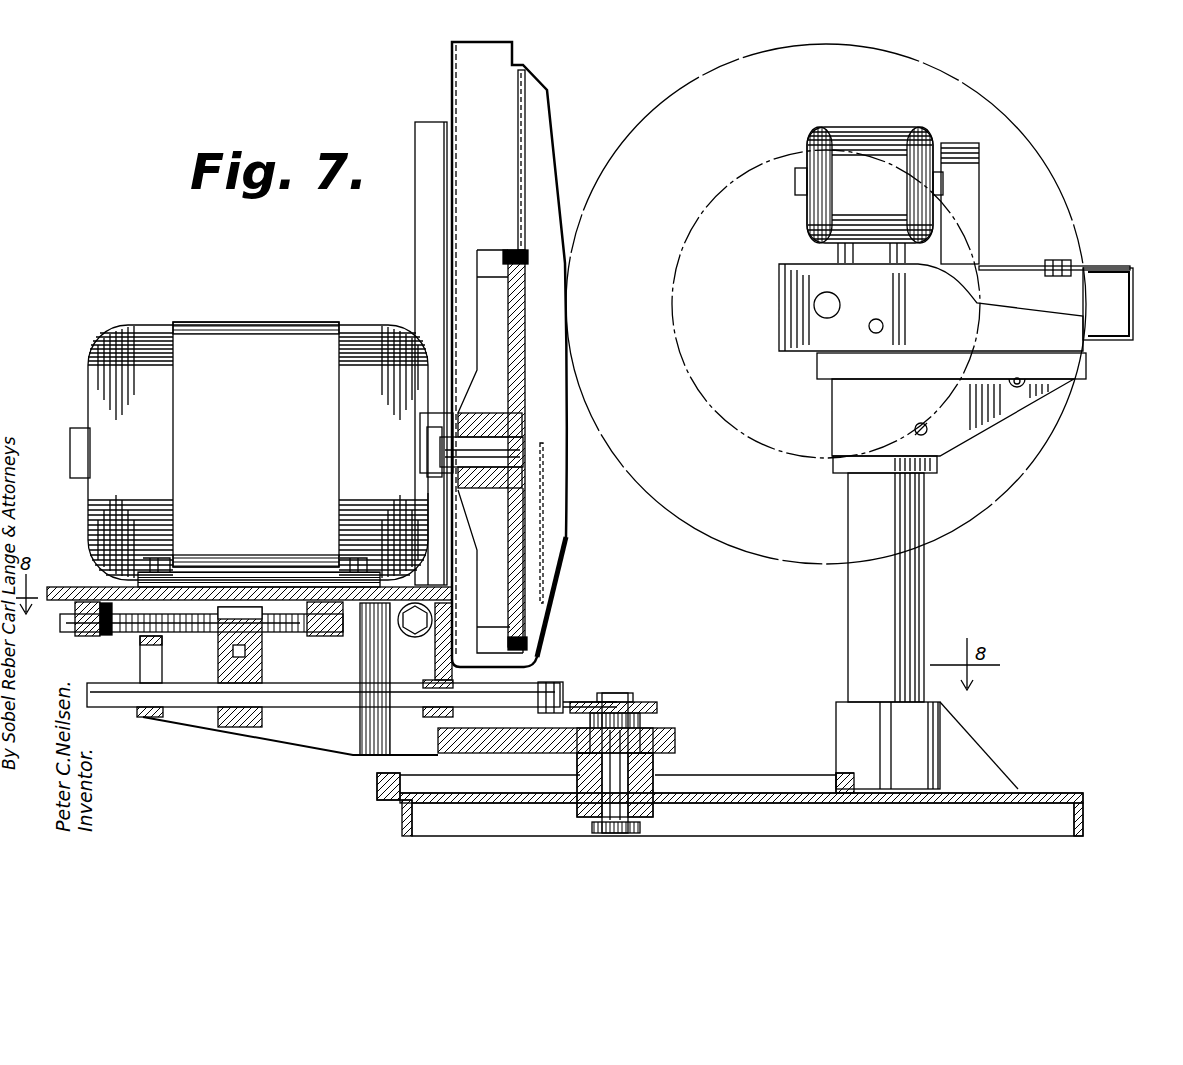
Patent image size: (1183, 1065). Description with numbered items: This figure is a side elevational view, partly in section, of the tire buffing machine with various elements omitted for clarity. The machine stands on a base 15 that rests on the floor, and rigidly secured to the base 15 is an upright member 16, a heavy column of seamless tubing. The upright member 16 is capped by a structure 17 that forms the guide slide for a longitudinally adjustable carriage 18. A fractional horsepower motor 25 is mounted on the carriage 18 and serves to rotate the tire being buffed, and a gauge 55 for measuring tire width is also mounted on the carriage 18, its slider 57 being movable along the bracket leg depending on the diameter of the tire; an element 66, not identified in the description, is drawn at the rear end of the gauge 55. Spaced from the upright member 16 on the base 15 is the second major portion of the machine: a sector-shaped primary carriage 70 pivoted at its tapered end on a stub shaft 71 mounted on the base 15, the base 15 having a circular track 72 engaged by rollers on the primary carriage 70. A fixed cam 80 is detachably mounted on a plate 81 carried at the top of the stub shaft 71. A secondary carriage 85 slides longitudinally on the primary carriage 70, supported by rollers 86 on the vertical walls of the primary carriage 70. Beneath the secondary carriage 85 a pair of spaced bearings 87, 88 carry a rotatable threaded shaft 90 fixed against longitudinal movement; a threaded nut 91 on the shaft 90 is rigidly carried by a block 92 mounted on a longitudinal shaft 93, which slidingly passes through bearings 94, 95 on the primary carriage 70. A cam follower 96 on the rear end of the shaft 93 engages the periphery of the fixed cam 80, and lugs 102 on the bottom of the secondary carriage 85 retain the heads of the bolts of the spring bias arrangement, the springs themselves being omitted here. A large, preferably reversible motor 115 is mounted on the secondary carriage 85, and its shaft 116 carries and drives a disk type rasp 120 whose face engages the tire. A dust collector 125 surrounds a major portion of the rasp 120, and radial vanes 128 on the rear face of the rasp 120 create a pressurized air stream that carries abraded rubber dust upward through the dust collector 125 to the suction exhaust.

The base 15 is at (400, 793).
The upright member 16 is at (924, 590).
The structure 17 is at (832, 396).
The carriage 18 is at (779, 282).
The motor 25 is at (855, 127).
The gauge 55 is at (1059, 238).
The slider 57 is at (1045, 266).
The switch box 66 is at (1092, 268).
The primary carriage 70 is at (270, 740).
The stub shaft 71 is at (670, 762).
The circular track 72 is at (378, 775).
The fixed cam 80 is at (620, 706).
The plate 81 is at (652, 710).
The secondary carriage 85 is at (74, 586).
The rollers 86 is at (406, 679).
The bearing 87 is at (100, 634).
The bearing 88 is at (331, 635).
The threaded shaft 90 is at (275, 633).
The threaded nut 91 is at (222, 636).
The block 92 is at (222, 663).
The longitudinal shaft 93 is at (323, 707).
The bearing 94 is at (148, 714).
The bearing 95 is at (432, 718).
The cam follower 96 is at (575, 687).
The lugs 102 is at (112, 636).
The motor 115 is at (142, 323).
The shaft 116 is at (487, 447).
The disk type rasp 120 is at (460, 290).
The dust collector 125 is at (460, 195).
The radial vanes 128 is at (460, 317).